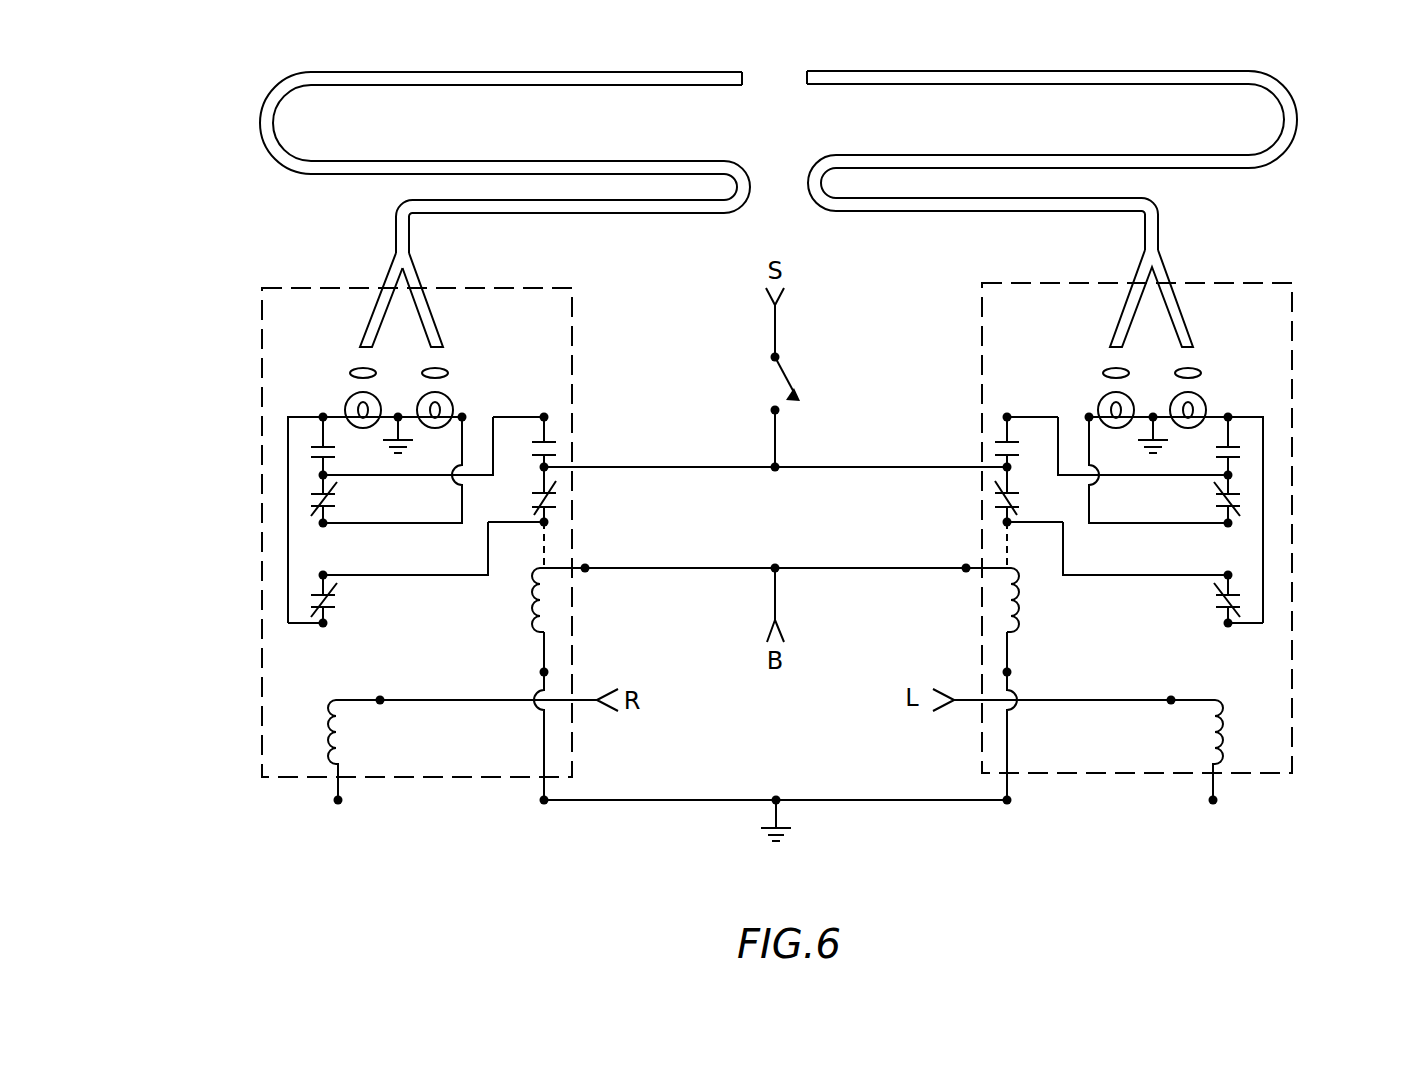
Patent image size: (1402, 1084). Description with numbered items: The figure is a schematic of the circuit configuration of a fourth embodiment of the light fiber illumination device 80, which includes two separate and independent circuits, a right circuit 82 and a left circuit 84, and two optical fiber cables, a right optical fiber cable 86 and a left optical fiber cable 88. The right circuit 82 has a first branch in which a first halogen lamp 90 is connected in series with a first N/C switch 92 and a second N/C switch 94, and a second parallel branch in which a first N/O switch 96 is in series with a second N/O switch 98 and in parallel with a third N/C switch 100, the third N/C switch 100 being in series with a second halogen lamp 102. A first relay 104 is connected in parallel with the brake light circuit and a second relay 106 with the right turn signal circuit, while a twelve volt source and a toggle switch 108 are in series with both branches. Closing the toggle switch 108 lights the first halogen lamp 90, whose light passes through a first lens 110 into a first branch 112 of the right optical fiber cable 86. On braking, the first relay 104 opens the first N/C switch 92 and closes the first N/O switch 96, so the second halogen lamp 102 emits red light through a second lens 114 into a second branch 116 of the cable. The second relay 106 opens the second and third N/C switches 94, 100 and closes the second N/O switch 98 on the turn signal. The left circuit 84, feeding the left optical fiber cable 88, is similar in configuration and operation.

The light fiber illumination device 80 is at (163, 201).
The right circuit 82 is at (560, 288).
The left circuit 84 is at (990, 283).
The right optical fiber cable 86 is at (276, 160).
The left optical fiber cable 88 is at (1287, 150).
The first halogen lamp 90 is at (345, 403).
The first N/C switch 92 is at (556, 500).
The second N/C switch 94 is at (310, 597).
The first N/O switch 96 is at (556, 450).
The second N/O switch 98 is at (305, 447).
The third N/C switch 100 is at (310, 500).
The second halogen lamp 102 is at (453, 407).
The first relay 104 is at (535, 633).
The second relay 106 is at (327, 718).
The toggle switch 108 is at (790, 375).
The first lens 110 is at (355, 370).
The first branch of the first optical fiber cable 112 is at (362, 330).
The second lens 114 is at (448, 370).
The second branch of the first optical fiber cable 116 is at (440, 332).